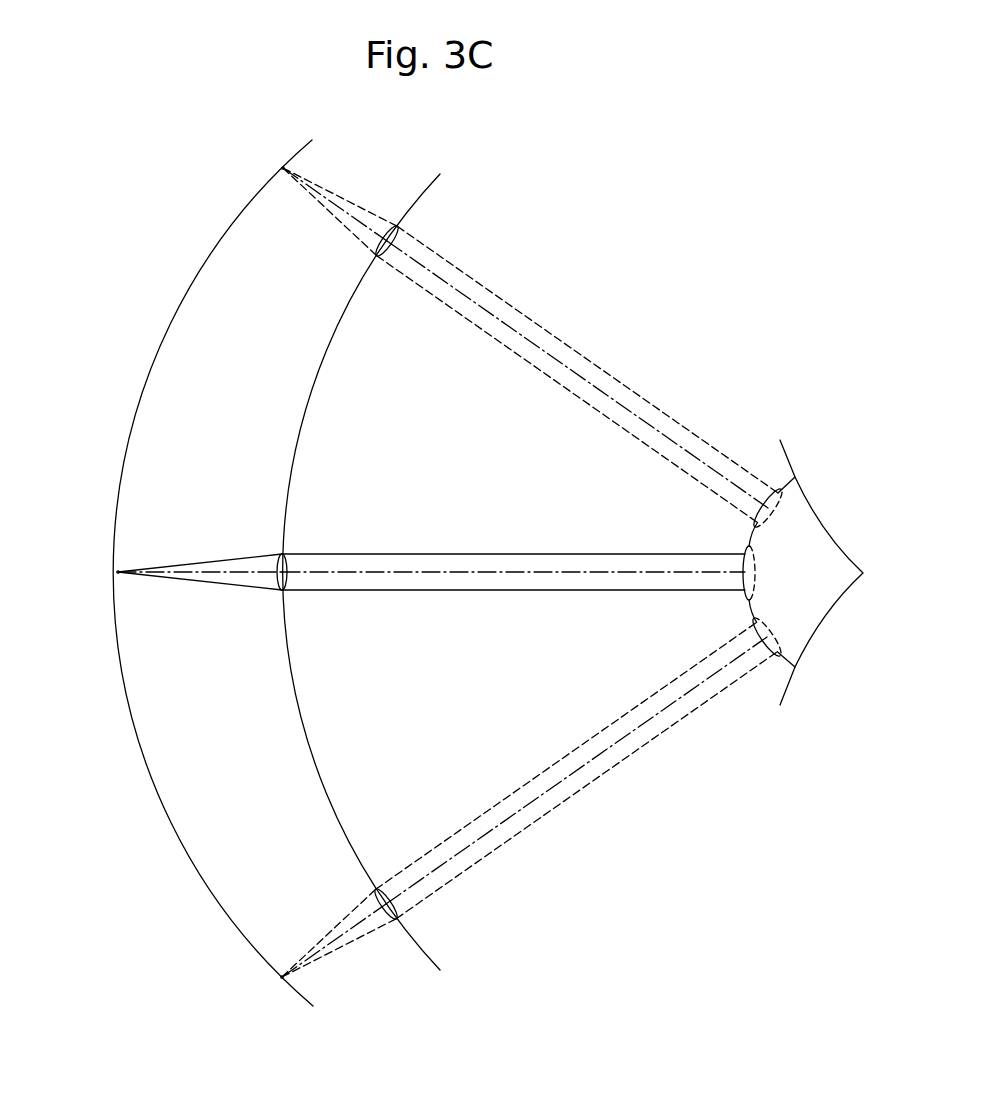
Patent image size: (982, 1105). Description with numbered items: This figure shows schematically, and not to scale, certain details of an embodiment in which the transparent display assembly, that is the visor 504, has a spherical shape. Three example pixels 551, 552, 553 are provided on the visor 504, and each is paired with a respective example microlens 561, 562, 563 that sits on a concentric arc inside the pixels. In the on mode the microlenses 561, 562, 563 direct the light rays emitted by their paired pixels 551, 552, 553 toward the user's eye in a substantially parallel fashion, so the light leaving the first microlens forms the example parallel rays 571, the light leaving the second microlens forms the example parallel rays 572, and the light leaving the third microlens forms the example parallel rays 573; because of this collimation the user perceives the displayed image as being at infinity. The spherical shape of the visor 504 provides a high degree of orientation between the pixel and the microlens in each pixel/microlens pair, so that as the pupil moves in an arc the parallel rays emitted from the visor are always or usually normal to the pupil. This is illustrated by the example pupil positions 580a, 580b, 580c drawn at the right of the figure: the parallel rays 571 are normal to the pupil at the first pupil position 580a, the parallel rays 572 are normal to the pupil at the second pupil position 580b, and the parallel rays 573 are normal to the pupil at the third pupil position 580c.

The visor 504 is at (215, 320).
The pixel 551 is at (283, 168).
The pixel 552 is at (118, 572).
The pixel 553 is at (282, 977).
The microlens 561 is at (398, 237).
The microlens 562 is at (284, 556).
The microlens 563 is at (397, 910).
The parallel rays 571 is at (558, 384).
The parallel rays 572 is at (475, 572).
The parallel rays 573 is at (652, 743).
The pupil position 580a is at (783, 488).
The pupil position 580b is at (748, 548).
The pupil position 580c is at (778, 657).